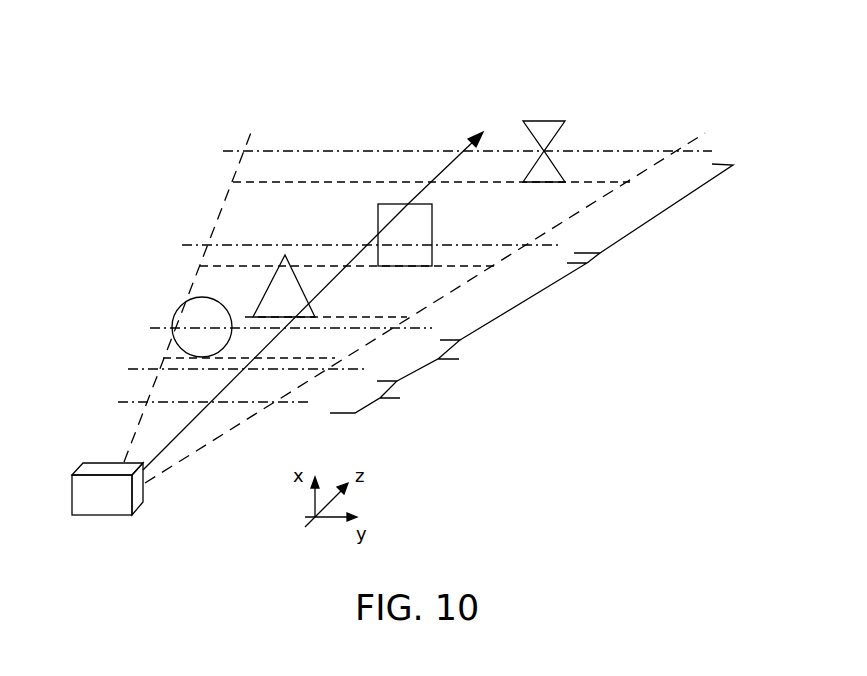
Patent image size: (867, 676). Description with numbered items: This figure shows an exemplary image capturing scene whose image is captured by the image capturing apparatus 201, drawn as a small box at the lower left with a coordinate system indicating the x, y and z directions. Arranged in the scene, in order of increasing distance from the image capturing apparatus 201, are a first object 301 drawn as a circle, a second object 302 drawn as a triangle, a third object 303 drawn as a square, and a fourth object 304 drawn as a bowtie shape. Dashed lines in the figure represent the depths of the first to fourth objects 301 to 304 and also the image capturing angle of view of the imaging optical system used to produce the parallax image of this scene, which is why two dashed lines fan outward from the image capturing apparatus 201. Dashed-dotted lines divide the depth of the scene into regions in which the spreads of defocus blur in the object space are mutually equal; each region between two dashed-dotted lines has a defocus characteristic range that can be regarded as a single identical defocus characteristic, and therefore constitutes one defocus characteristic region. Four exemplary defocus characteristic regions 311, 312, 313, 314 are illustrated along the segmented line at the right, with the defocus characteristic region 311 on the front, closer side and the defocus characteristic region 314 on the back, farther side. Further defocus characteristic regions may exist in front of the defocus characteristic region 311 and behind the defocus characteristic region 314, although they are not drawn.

The image capturing apparatus 201 is at (137, 508).
The first object 301 is at (172, 318).
The second object 302 is at (268, 288).
The third object 303 is at (395, 204).
The fourth object 304 is at (556, 120).
The defocus characteristic region 311 is at (394, 404).
The defocus characteristic region 312 is at (455, 362).
The defocus characteristic region 313 is at (532, 298).
The defocus characteristic region 314 is at (665, 210).